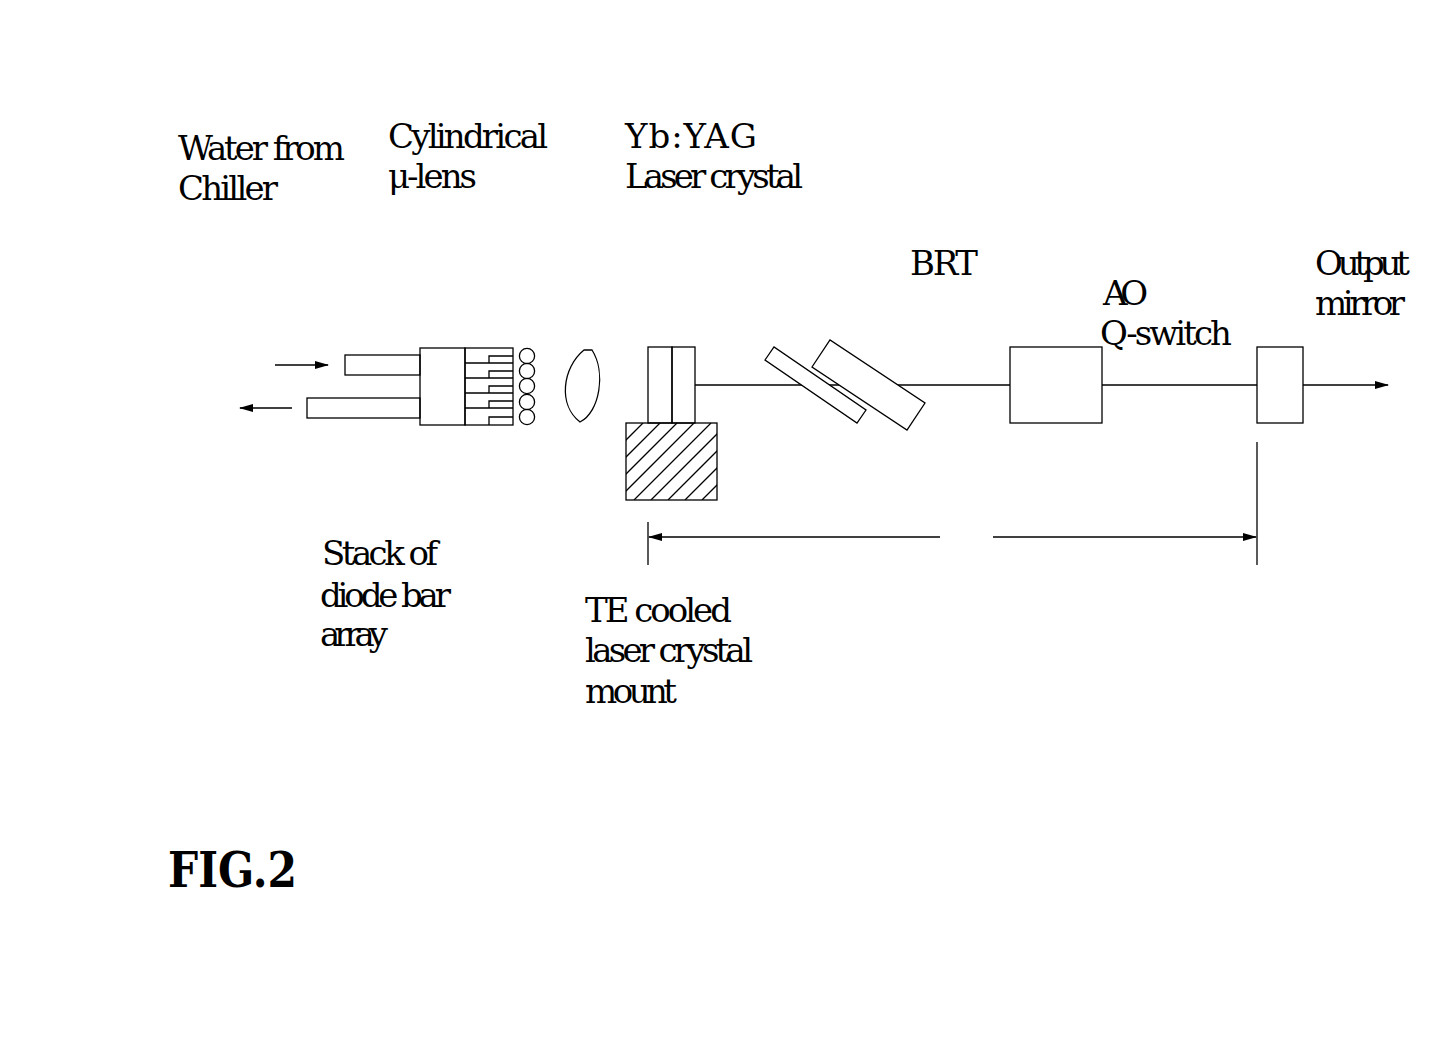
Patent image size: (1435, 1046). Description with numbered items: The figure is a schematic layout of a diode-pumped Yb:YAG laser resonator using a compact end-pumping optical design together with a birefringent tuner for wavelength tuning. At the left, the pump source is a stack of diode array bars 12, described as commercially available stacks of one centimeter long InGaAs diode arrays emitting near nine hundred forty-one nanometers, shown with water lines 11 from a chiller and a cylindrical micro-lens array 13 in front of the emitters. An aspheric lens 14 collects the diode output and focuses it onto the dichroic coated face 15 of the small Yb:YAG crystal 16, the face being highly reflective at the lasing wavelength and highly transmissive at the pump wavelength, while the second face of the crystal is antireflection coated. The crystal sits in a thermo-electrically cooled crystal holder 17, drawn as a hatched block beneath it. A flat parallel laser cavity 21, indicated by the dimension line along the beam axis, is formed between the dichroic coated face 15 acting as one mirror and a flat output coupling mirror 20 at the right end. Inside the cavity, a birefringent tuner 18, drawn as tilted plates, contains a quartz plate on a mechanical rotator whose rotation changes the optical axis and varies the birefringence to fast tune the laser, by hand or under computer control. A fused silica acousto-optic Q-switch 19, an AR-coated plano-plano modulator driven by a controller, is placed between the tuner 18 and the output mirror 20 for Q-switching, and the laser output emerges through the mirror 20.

The water from chiller 11 is at (265, 307).
The stack of diode array bars 12 is at (405, 439).
The cylindrical micro-lens 13 is at (501, 312).
The aspheric lens 14 is at (575, 334).
The dichroic coated face 15 is at (661, 311).
The Yb:YAG crystal 16 is at (735, 331).
The thermo-electrically cooled crystal holder 17 is at (664, 504).
The birefringent tuner 18 is at (834, 330).
The acousto-optic Q-switch 19 is at (1079, 330).
The flat output coupling mirror 20 is at (1307, 310).
The flat parallel laser cavity 21 is at (952, 503).